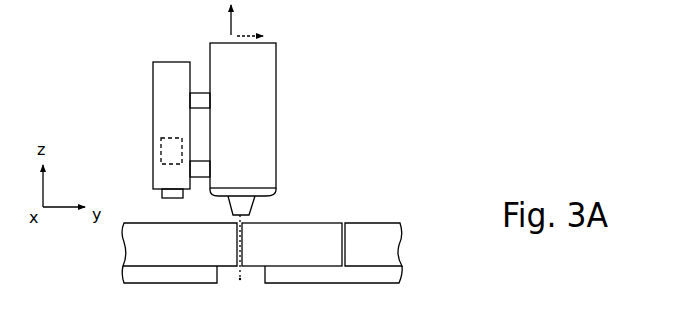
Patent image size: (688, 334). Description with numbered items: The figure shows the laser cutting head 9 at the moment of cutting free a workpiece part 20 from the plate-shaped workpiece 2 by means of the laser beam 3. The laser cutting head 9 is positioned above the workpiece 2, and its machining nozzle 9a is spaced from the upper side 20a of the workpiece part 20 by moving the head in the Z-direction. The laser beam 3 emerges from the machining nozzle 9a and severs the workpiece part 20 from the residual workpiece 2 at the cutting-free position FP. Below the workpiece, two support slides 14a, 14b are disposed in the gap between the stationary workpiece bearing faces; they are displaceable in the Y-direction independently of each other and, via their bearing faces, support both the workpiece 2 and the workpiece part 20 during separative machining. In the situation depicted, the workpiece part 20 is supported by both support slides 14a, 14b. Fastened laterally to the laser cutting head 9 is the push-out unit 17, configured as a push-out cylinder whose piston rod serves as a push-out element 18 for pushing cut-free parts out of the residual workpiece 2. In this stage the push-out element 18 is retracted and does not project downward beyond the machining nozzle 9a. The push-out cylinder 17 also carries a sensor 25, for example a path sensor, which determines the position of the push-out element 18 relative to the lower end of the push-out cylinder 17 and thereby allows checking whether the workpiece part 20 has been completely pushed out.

The laser cutting head 9 is at (263, 75).
The machining nozzle 9a is at (254, 210).
The push-out unit 17 is at (168, 82).
The sensor 25 is at (168, 148).
The push-out element 18 is at (163, 194).
The upper side of the cut-free workpiece part 20a is at (284, 222).
The workpiece part 20 is at (328, 240).
The workpiece 2 is at (382, 238).
The first support slide 14a is at (175, 275).
The second support slide 14b is at (313, 273).
The laser beam 3 is at (239, 282).
The cutting-free position FP is at (242, 283).